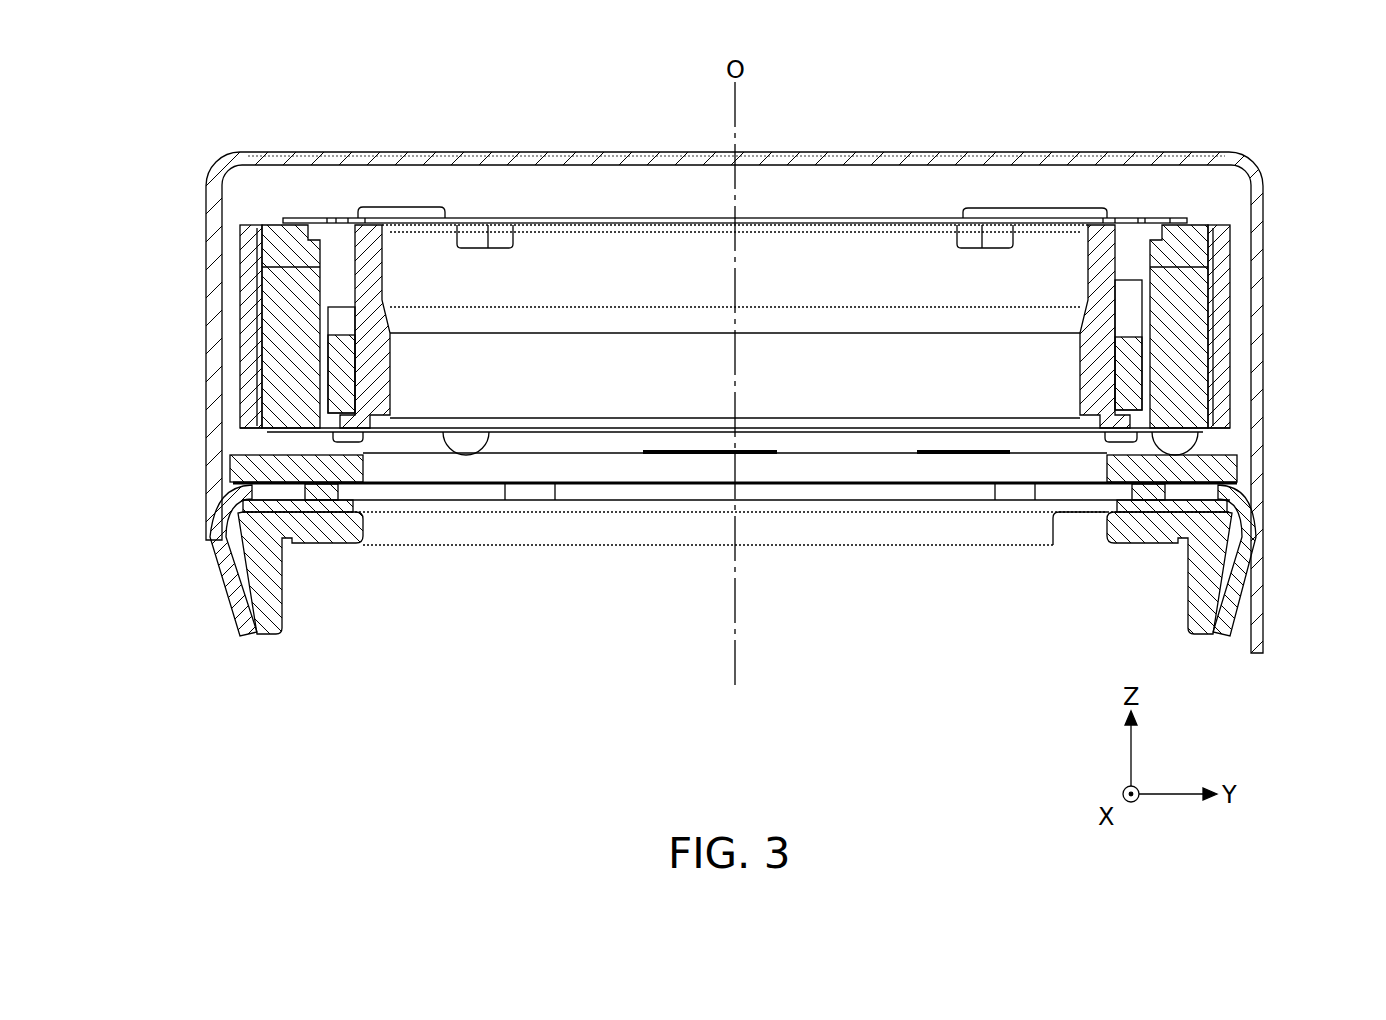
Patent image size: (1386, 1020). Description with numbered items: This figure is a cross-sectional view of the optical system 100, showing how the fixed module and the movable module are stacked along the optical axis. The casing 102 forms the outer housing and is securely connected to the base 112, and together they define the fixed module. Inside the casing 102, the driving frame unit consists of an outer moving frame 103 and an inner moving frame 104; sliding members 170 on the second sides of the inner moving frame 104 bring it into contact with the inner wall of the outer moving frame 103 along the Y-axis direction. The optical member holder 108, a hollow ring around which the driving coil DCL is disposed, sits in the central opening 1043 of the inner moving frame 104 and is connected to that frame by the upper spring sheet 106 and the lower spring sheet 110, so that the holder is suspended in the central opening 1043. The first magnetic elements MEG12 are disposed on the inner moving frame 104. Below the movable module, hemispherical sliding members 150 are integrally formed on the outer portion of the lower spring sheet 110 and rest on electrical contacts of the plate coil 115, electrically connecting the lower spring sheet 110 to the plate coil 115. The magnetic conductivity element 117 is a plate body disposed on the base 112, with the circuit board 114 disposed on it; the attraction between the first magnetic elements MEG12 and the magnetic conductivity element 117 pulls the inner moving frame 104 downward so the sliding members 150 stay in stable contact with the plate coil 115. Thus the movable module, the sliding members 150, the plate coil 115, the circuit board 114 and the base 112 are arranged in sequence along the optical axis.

The optical system 100 is at (1257, 97).
The casing 102 is at (1258, 190).
The outer moving frame 103 is at (1223, 385).
The inner moving frame 104 is at (1197, 242).
The central opening 1043 is at (1133, 262).
The upper spring sheet 106 is at (1062, 218).
The optical member holder 108 is at (865, 275).
The lower spring sheet 110 is at (877, 434).
The base 112 is at (278, 587).
The circuit board 114 is at (230, 590).
The plate coil 115 is at (235, 468).
The magnetic conductivity element 117 is at (318, 505).
The sliding member 150 is at (466, 437).
The sliding member 170 is at (258, 313).
The first magnetic element MEG12 is at (270, 288).
The driving coil DCL is at (335, 375).